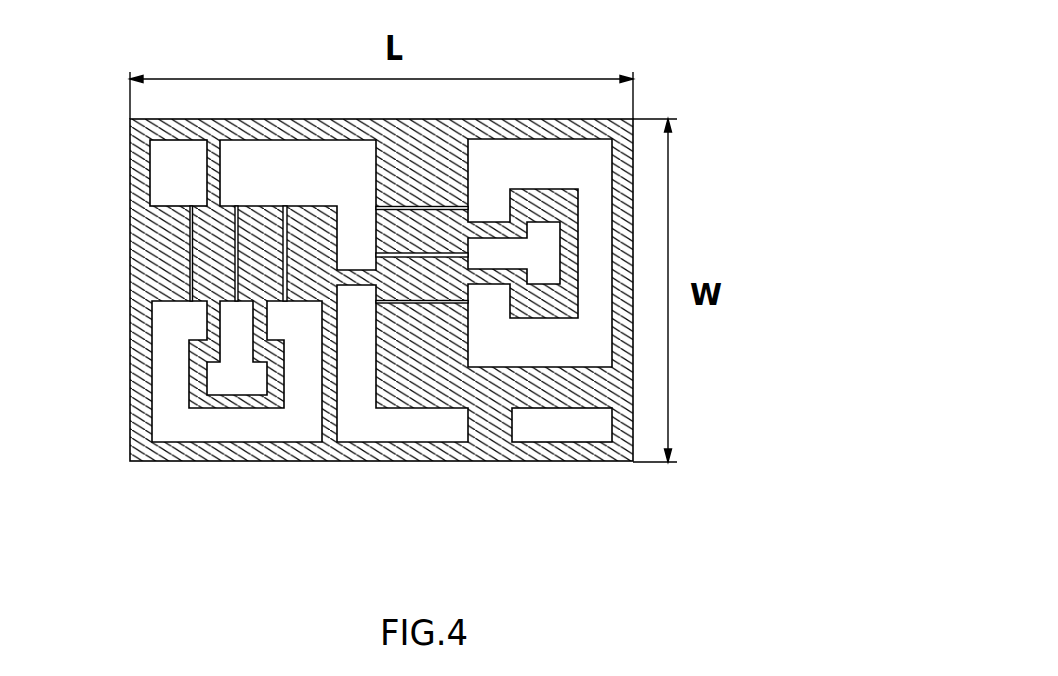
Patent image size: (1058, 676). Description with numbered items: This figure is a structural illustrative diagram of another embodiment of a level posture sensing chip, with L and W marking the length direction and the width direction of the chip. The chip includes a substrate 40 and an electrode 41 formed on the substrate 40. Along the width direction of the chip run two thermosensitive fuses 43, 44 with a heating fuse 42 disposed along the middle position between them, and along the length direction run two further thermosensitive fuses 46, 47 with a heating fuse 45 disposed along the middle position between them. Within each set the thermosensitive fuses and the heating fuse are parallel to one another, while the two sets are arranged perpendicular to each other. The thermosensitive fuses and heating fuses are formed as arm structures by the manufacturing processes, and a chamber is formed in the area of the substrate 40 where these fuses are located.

The substrate 40 is at (381, 344).
The electrode 41 is at (193, 167).
The heating fuse 42 is at (123, 220).
The thermosensitive fuse 43 is at (100, 246).
The thermosensitive fuse 44 is at (147, 257).
The heating fuse 45 is at (590, 202).
The thermosensitive fuse 46 is at (590, 138).
The thermosensitive fuse 47 is at (584, 260).